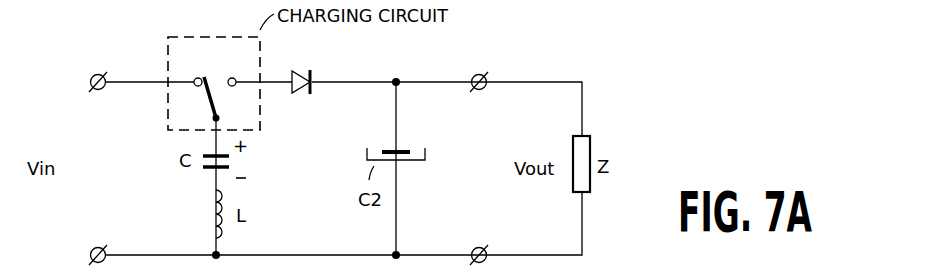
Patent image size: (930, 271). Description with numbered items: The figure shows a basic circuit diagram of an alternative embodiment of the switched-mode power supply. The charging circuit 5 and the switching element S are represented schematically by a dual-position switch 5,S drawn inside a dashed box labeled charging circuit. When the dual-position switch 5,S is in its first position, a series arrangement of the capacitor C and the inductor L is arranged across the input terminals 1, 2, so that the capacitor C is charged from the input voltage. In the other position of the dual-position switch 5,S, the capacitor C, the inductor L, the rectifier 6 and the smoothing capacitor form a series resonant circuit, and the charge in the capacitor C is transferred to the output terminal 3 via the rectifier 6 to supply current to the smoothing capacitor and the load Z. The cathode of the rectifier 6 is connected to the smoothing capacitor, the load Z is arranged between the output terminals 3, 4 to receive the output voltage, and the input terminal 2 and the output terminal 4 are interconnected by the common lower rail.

The input terminal 1 is at (90, 81).
The input terminal 2 is at (89, 253).
The output terminal 3 is at (481, 92).
The output terminal 4 is at (482, 246).
The charging circuit 5 is at (168, 42).
The rectifier 6 is at (305, 72).